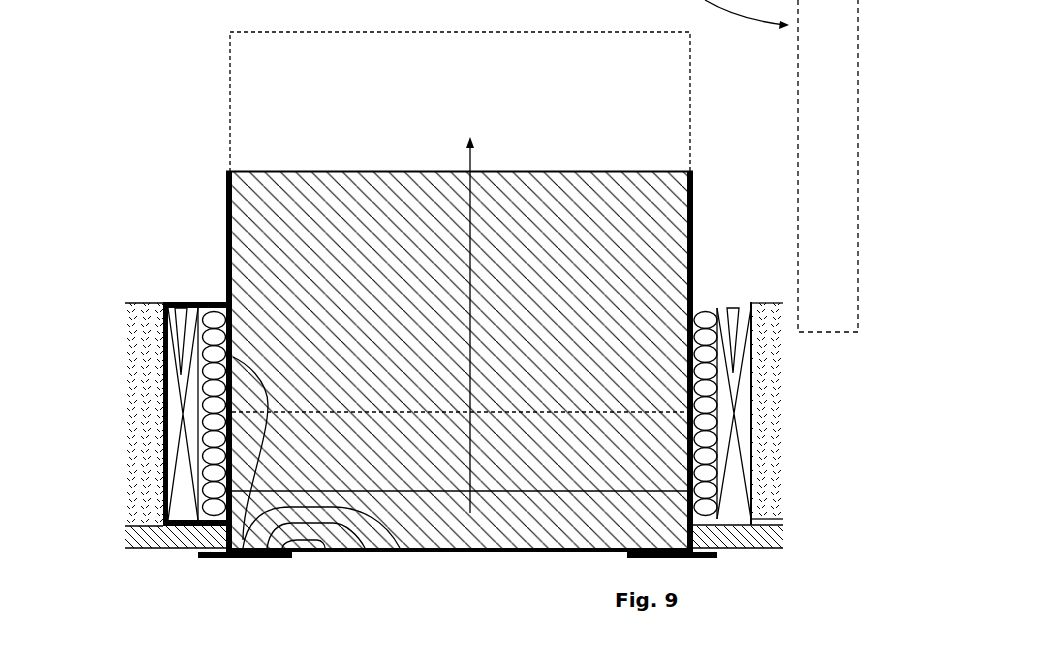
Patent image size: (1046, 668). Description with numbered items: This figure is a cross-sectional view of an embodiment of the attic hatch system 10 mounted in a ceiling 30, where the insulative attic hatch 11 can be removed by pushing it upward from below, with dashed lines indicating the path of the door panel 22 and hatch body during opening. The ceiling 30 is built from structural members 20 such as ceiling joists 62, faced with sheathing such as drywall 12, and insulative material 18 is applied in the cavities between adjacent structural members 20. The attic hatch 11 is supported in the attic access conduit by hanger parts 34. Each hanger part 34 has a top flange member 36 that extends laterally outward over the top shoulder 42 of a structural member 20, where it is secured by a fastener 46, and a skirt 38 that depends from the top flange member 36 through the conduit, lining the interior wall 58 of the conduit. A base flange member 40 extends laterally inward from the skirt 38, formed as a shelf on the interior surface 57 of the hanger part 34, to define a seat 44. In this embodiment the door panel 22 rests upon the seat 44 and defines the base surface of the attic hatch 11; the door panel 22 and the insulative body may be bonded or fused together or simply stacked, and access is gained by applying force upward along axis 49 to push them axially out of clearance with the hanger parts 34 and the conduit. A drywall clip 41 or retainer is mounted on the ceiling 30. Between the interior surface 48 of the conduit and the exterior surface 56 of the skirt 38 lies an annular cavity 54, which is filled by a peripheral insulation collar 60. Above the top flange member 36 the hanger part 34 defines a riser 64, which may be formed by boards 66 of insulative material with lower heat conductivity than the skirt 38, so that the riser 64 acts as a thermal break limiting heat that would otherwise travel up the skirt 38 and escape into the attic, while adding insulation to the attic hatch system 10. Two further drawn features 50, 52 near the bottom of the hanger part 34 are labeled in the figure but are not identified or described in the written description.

The attic hatch system 10 is at (127, 152).
The insulative attic hatch 11 is at (200, 94).
The drywall 12 is at (112, 537).
The insulative material 18 is at (125, 303).
The structural member 20 is at (752, 400).
The door panel 22 is at (840, 7).
The ceiling 30 is at (128, 553).
The hanger part 34 is at (223, 300).
The top flange member 36 is at (198, 300).
The skirt 38 is at (225, 240).
The base flange member 40 is at (365, 548).
The drywall clip 41 is at (212, 552).
The top shoulder 42 is at (165, 322).
The seat 44 is at (325, 548).
The fastener 46 is at (166, 302).
The interior surface 48 is at (200, 460).
The axis 49 is at (473, 160).
The cross brace 50 is at (183, 300).
The outer channel 52 is at (400, 548).
The annular cavity 54 is at (203, 507).
The exterior surface of the skirt 56 is at (200, 390).
The interior surface of the hanger part 57 is at (243, 540).
The interior wall of the attic access conduit 58 is at (200, 497).
The peripheral insulation collar 60 is at (703, 320).
The ceiling joist 62 is at (165, 510).
The riser 64 is at (227, 217).
The board 66 is at (200, 405).